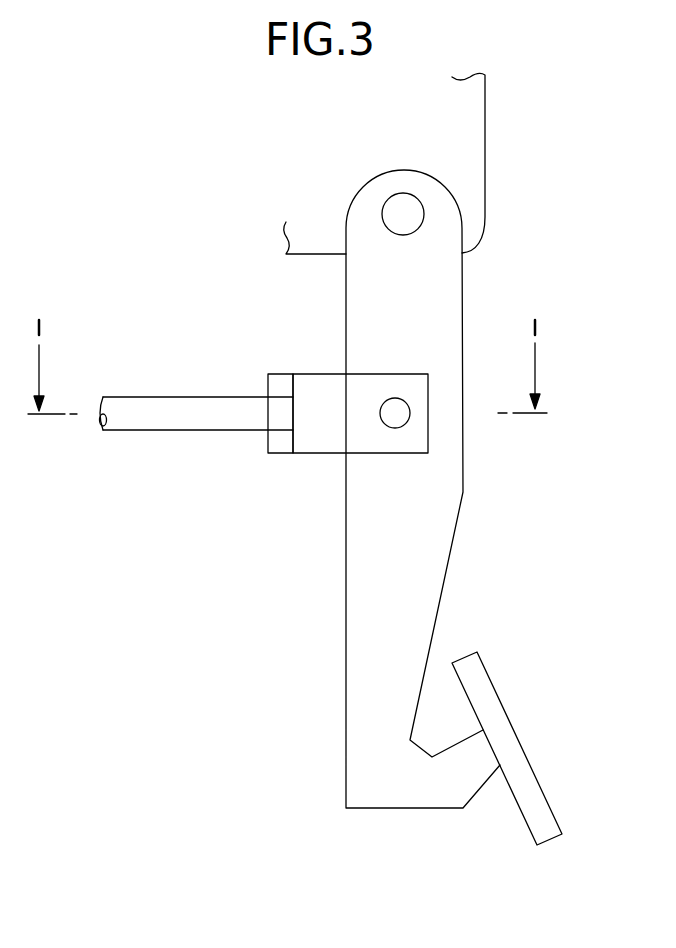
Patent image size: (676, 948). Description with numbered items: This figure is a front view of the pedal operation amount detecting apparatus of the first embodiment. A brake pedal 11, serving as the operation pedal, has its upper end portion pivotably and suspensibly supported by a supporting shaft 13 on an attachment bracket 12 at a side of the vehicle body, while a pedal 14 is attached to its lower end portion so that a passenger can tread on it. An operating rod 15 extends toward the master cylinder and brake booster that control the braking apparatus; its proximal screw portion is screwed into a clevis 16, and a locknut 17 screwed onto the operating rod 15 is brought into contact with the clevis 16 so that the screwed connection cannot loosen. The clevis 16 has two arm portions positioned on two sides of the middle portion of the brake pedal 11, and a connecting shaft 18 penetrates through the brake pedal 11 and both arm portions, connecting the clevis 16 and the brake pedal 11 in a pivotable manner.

The brake pedal 11 is at (430, 543).
The attachment bracket 12 is at (477, 140).
The supporting shaft 13 is at (403, 215).
The pedal 14 is at (507, 746).
The operating rod 15 is at (145, 415).
The clevis 16 is at (310, 440).
The locknut 17 is at (282, 385).
The connecting shaft 18 is at (395, 413).